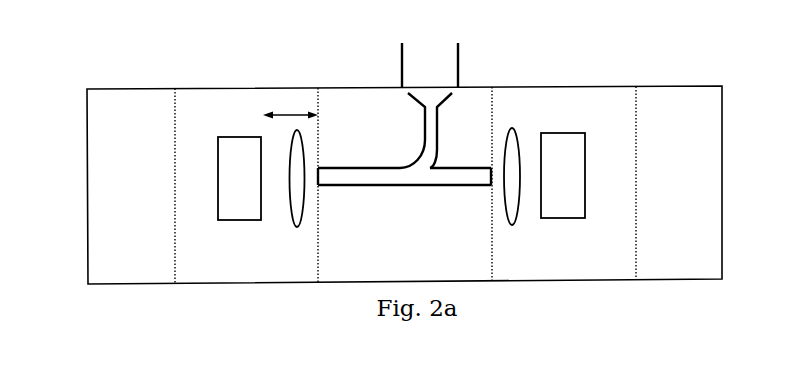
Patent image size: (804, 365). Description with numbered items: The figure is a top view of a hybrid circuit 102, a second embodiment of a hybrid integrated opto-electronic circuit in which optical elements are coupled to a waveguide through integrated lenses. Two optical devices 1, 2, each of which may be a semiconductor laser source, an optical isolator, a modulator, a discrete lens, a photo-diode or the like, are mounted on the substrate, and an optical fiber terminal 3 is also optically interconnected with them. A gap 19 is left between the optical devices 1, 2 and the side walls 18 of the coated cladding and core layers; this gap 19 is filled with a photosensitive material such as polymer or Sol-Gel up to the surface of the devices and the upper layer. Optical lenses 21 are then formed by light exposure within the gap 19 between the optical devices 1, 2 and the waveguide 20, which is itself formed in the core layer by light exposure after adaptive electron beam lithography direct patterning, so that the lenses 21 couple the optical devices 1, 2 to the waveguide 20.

The hybrid circuit 102 is at (102, 89).
The optical device 1 is at (240, 137).
The optical device 2 is at (563, 133).
The optical fiber terminal 3 is at (430, 50).
The side walls 18 is at (318, 262).
The gap 19 is at (290, 107).
The waveguide pattern 20 is at (369, 176).
The optical lenses 21 is at (297, 213).